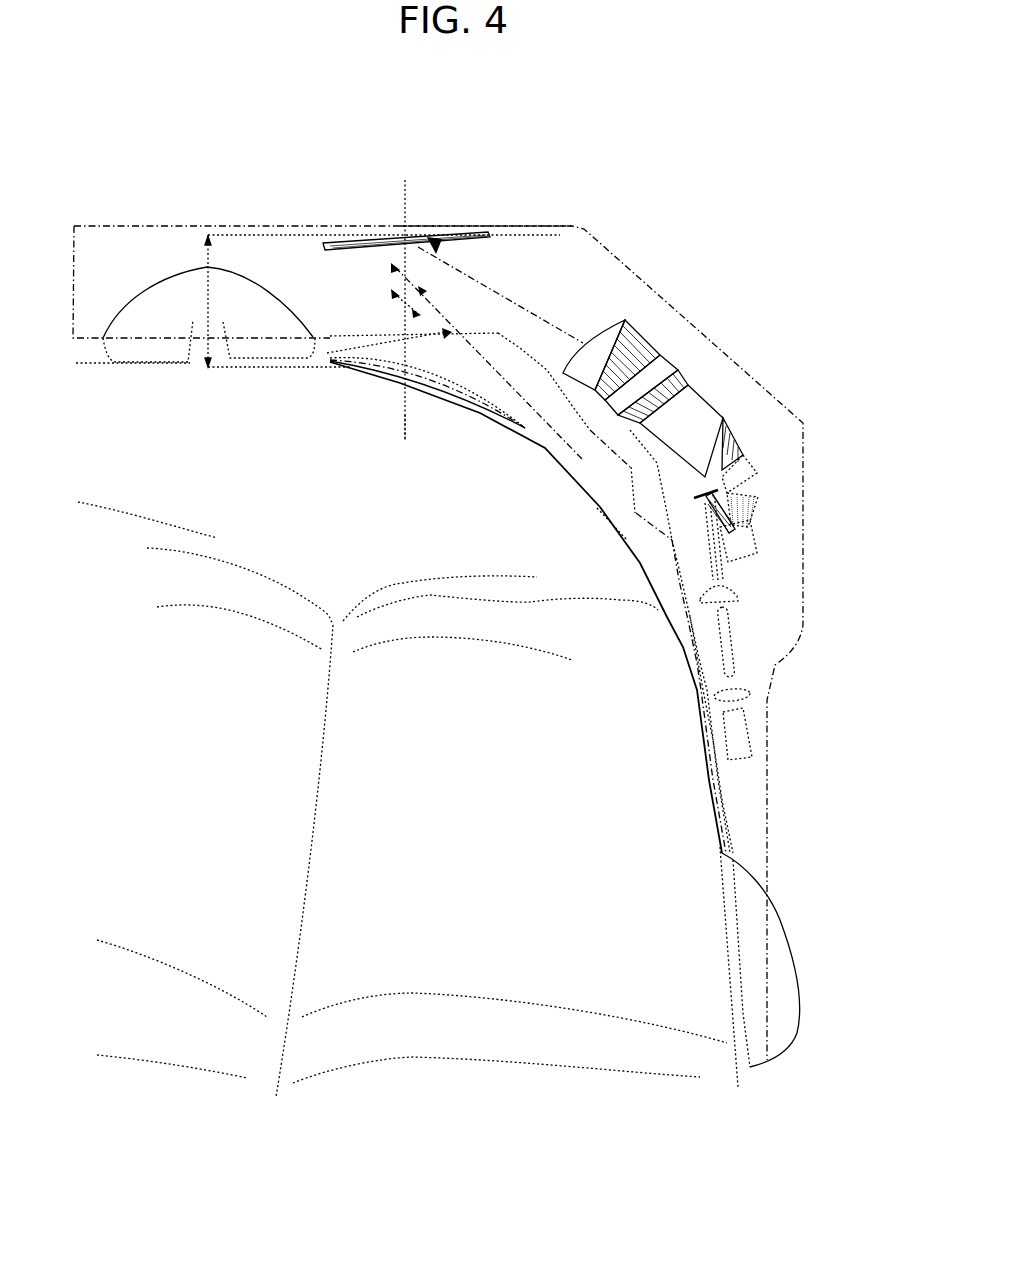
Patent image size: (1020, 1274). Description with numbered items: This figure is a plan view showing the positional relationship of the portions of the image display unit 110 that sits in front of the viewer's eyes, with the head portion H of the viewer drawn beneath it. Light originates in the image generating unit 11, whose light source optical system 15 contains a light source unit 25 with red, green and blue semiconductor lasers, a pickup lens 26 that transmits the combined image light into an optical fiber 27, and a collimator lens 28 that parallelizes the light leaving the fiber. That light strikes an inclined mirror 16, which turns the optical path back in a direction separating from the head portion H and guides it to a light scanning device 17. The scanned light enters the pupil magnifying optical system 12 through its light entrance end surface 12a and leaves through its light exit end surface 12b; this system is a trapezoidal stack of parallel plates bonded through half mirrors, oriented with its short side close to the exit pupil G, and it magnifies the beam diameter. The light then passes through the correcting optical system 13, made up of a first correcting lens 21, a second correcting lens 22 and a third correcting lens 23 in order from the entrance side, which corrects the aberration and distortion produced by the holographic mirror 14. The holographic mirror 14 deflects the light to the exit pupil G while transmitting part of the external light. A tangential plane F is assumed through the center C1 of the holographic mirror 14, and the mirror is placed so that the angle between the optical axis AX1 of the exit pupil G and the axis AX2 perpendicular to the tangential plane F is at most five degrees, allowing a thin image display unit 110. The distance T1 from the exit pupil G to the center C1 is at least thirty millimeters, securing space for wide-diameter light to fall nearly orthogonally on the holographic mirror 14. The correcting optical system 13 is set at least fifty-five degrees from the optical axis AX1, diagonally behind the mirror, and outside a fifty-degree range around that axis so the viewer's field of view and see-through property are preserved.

The image display unit 110 is at (290, 160).
The distance T1 is at (207, 292).
The holographic mirror 14 is at (332, 242).
The center C1 is at (400, 296).
The exit pupil G is at (404, 440).
The tangential plane F is at (492, 232).
The optical axis AX1 is at (403, 364).
The axis AX2 is at (390, 270).
The correcting optical system 13 is at (740, 247).
The third correcting lens 23 is at (627, 320).
The second correcting lens 22 is at (665, 353).
The first correcting lens 21 is at (692, 383).
The pupil magnifying optical system 12 is at (750, 463).
The light entrance end surface 12a is at (760, 498).
The light exit end surface 12b is at (747, 443).
The light scanning device 17 is at (745, 545).
The mirror 16 is at (700, 495).
The collimator lens 28 is at (738, 587).
The optical fiber 27 is at (727, 638).
The pickup lens 26 is at (740, 697).
The light source unit 25 is at (747, 742).
The image generating unit 11 is at (665, 650).
The light source optical system 15 is at (683, 720).
The head portion H is at (503, 1032).